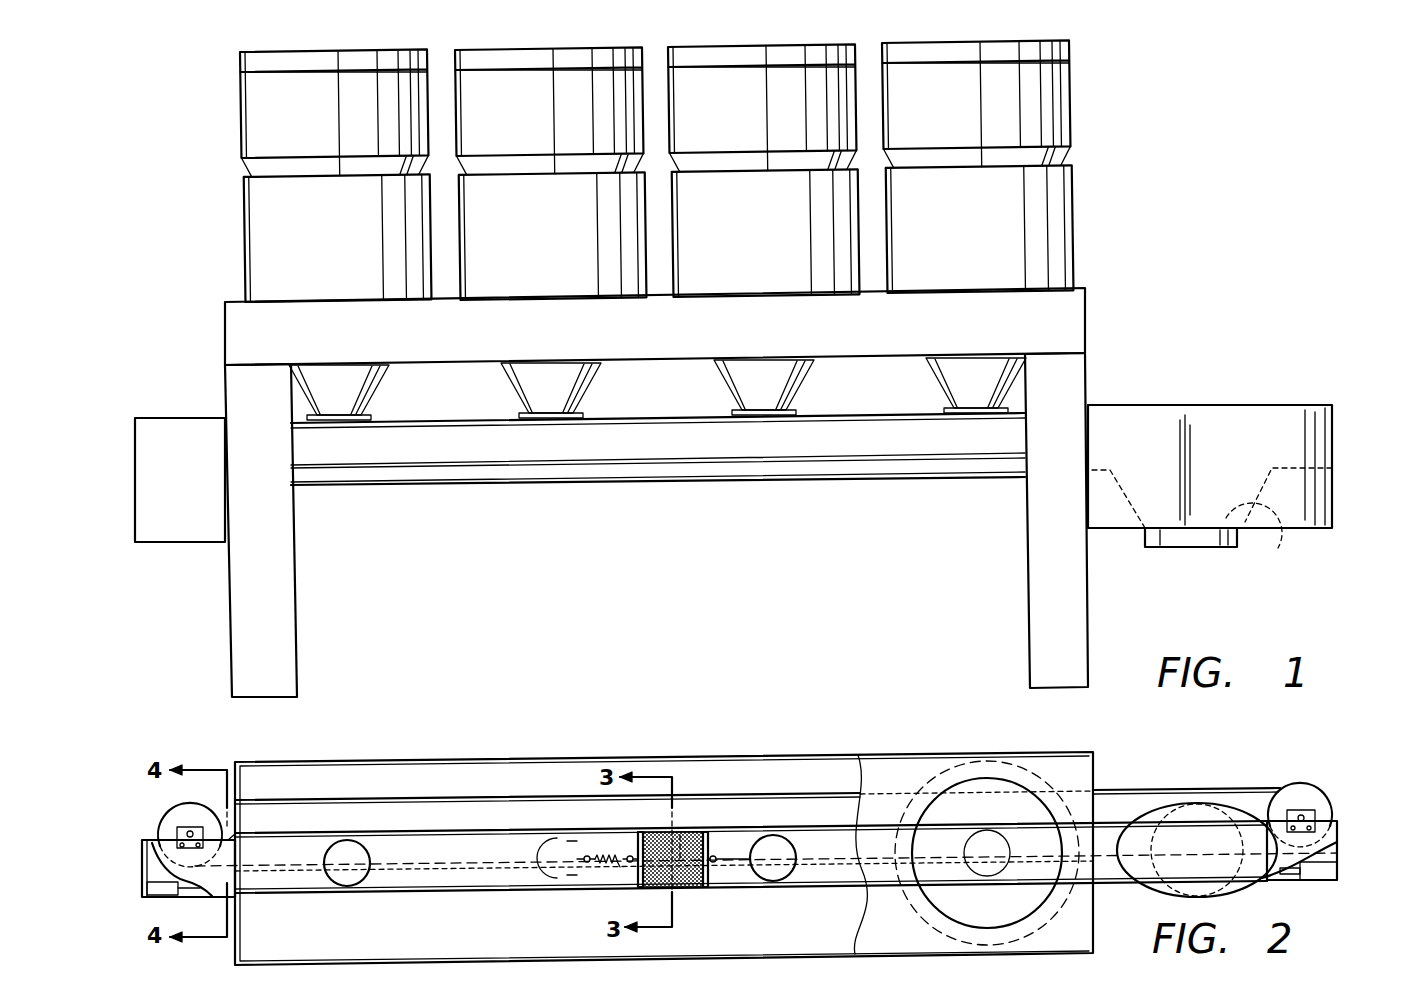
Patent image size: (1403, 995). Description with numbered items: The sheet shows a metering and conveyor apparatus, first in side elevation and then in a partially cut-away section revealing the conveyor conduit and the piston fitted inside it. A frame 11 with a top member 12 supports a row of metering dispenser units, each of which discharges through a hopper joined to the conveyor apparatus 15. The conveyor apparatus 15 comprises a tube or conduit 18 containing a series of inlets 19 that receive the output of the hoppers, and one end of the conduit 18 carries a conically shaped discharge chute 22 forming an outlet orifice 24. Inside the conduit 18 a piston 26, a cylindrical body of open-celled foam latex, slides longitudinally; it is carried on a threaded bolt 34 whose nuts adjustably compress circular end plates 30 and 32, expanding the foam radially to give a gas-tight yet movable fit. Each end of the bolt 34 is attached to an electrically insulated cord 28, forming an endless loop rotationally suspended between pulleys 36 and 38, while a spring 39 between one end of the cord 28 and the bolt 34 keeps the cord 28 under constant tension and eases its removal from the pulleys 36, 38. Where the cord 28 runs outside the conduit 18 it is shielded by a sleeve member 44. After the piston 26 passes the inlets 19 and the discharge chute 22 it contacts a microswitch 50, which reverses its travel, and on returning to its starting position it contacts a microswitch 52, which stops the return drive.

In FIG. 1, the frame 11 is at (676, 487).
In FIG. 1, the top member 12 is at (1023, 328).
In FIG. 1, the conveyor apparatus 15 is at (1344, 400).
In FIG. 1, the conduit 18 is at (683, 451).
In FIG. 2, the conduit 18 is at (435, 875).
In FIG. 2, the inlet 19 is at (335, 875).
In FIG. 1, the discharge chute 22 is at (1280, 548).
In FIG. 2, the discharge chute 22 is at (1245, 887).
In FIG. 1, the outlet orifice 24 is at (1235, 548).
In FIG. 2, the outlet orifice 24 is at (1215, 888).
In FIG. 2, the piston 26 is at (684, 872).
In FIG. 2, the cord 28 is at (777, 858).
In FIG. 2, the circular end plate 30 is at (645, 832).
In FIG. 2, the circular end plate 32 is at (708, 832).
In FIG. 2, the threaded bolt 34 is at (683, 823).
In FIG. 2, the pulley 36 is at (170, 817).
In FIG. 2, the pulley 38 is at (1312, 800).
In FIG. 2, the spring 39 is at (600, 862).
In FIG. 2, the sleeve member 44 is at (465, 800).
In FIG. 2, the microswitch 50 is at (1337, 872).
In FIG. 2, the microswitch 52 is at (150, 898).